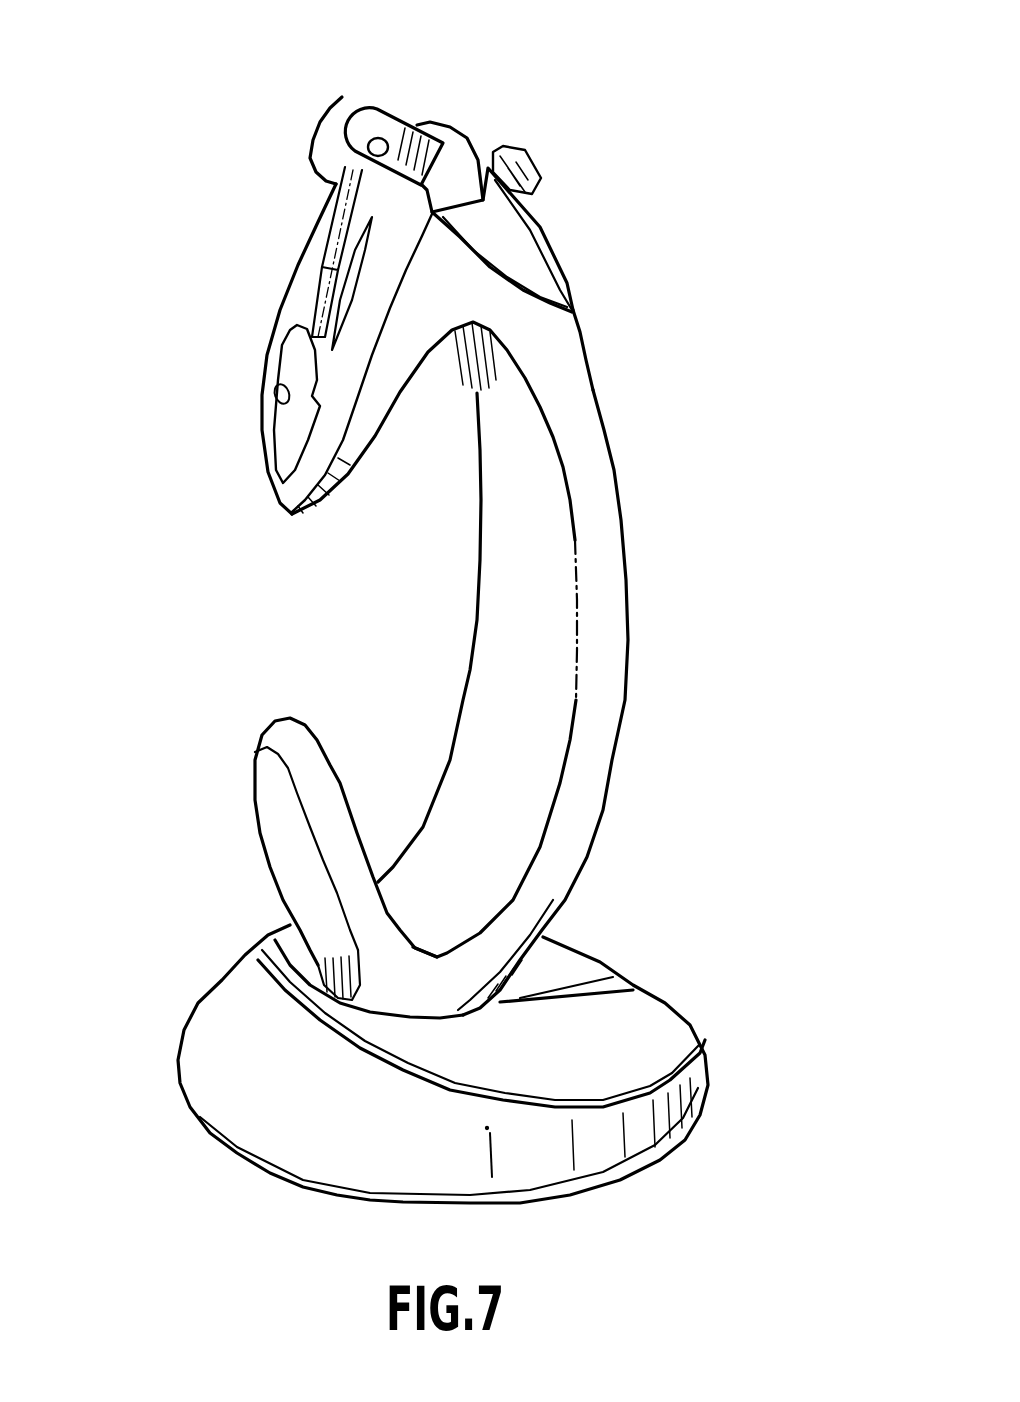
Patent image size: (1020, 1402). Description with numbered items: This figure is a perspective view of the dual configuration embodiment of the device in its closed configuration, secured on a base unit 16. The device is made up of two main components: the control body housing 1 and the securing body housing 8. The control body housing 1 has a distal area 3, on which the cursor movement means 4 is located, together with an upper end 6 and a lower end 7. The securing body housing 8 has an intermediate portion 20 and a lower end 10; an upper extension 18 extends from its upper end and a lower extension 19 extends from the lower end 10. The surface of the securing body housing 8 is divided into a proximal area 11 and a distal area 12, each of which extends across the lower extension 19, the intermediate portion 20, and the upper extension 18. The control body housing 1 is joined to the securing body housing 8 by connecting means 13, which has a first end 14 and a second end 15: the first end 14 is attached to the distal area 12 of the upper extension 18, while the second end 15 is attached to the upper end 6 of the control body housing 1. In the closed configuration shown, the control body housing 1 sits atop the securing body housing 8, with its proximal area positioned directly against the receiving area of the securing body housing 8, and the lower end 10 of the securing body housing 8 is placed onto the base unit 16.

The control body housing 1 is at (562, 247).
The distal area 3 is at (542, 220).
The cursor movement means 4 is at (535, 167).
The upper end 6 is at (462, 152).
The lower end 7 is at (580, 300).
The securing body housing 8 is at (627, 683).
The lower end 10 is at (540, 936).
The proximal area 11 is at (493, 570).
The distal area 12 is at (297, 285).
The connecting means 13 is at (340, 187).
The first end 14 is at (283, 425).
The second end 15 is at (390, 113).
The base unit 16 is at (690, 1055).
The upper extension 18 is at (270, 373).
The lower extension 19 is at (255, 790).
The intermediate portion 20 is at (475, 503).